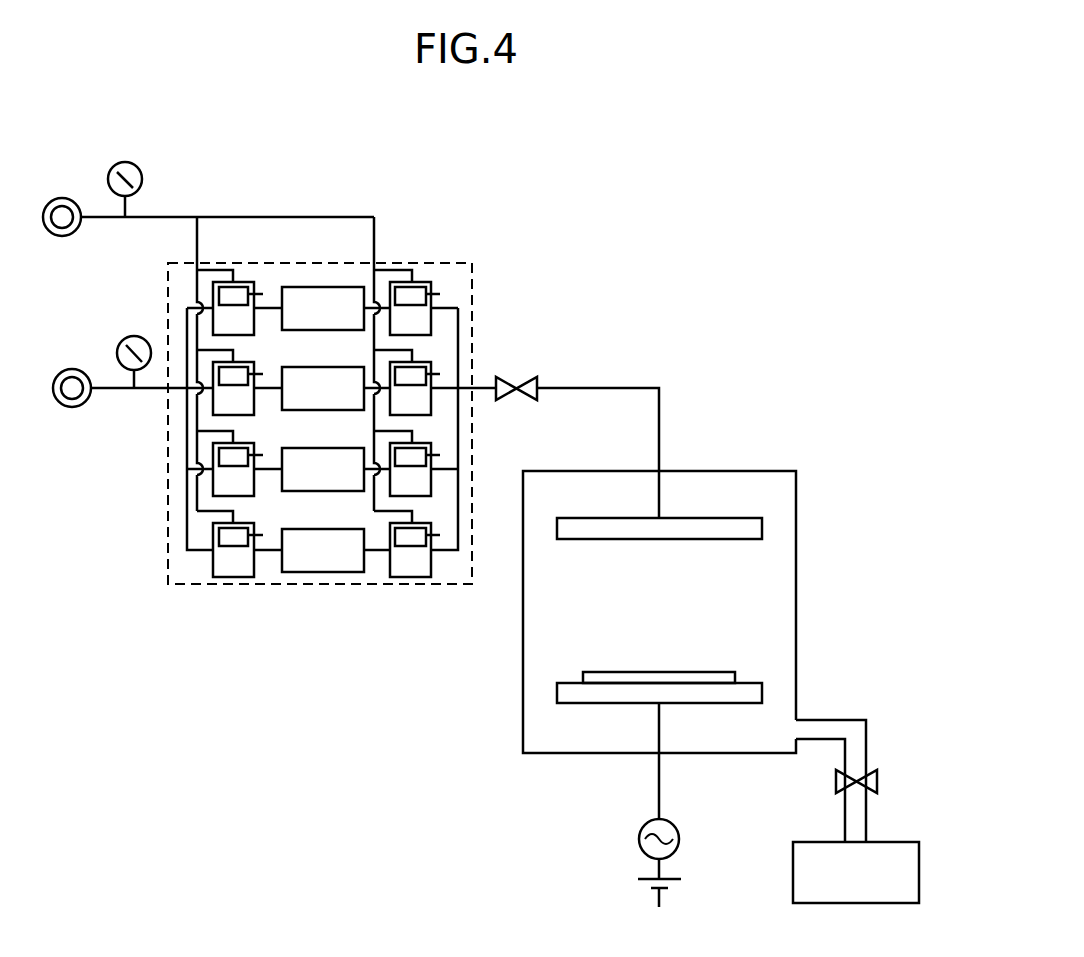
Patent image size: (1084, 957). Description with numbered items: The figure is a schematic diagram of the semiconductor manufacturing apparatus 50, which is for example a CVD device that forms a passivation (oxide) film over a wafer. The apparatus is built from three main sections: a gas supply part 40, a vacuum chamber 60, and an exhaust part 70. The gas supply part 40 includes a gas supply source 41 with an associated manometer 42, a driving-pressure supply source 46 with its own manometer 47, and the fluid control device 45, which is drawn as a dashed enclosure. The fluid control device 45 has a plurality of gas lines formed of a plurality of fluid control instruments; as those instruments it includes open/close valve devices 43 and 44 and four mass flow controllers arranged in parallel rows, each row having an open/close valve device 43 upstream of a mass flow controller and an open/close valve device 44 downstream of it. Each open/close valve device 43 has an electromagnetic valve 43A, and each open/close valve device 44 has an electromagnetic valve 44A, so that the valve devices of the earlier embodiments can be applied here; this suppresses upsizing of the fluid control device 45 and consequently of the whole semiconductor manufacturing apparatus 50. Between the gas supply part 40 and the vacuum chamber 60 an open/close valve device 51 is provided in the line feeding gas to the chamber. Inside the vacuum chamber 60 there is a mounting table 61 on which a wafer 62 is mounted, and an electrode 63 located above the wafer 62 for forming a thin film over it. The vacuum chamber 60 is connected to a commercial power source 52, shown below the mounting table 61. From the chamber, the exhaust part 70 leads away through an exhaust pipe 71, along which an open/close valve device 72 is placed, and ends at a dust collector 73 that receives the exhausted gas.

The gas supply part 40 is at (124, 526).
The gas supply source 41 is at (68, 407).
The manometer 42 is at (141, 336).
The open/close valve device 43 is at (233, 287).
The electromagnetic valve 43A is at (228, 362).
The open/close valve device 44 is at (424, 282).
The electromagnetic valve 44A is at (433, 367).
The fluid control device 45 is at (320, 585).
The driving-pressure supply source 46 is at (62, 198).
The manometer 47 is at (135, 162).
The semiconductor manufacturing apparatus 50 is at (765, 345).
The open/close valve device 51 is at (531, 376).
The commercial power source 52 is at (639, 836).
The vacuum chamber 60 is at (769, 470).
The mounting table 61 is at (753, 693).
The wafer 62 is at (720, 675).
The electrode 63 is at (755, 528).
The exhaust part 70 is at (843, 811).
The exhaust pipe 71 is at (868, 746).
The open/close valve device 72 is at (835, 790).
The dust collector 73 is at (793, 877).